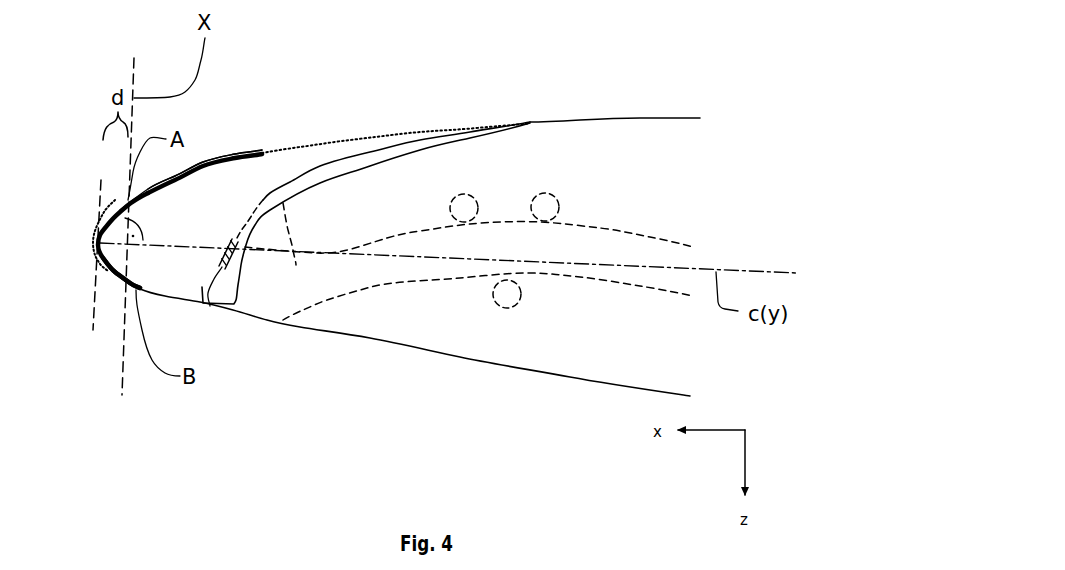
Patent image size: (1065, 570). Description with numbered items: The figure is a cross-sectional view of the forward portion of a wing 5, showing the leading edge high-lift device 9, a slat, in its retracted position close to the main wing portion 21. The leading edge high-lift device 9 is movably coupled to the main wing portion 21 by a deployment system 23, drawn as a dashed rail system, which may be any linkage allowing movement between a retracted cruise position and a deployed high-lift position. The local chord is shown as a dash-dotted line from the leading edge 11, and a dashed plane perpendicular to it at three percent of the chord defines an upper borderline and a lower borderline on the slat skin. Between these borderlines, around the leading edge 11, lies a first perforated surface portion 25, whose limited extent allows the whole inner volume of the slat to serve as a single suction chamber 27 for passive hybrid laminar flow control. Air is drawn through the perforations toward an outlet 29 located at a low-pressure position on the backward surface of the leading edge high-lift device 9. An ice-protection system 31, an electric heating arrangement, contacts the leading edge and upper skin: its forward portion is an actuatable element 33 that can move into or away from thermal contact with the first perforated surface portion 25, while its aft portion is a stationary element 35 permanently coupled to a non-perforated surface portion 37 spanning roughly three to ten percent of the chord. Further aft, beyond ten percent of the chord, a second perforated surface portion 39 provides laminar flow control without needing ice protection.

The wing 5 is at (640, 62).
The leading edge high-lift device 9 is at (281, 112).
The leading edge 11 is at (93, 247).
The main wing portion 21 is at (540, 343).
The deployment system 23 is at (460, 298).
The first perforated surface portion 25 is at (110, 210).
The suction chamber 27 is at (180, 290).
The outlet 29 is at (217, 306).
The ice-protection system 31 is at (152, 217).
The actuatable element 33 is at (112, 268).
The stationary element 35 is at (182, 177).
The non-perforated surface portion 37 is at (203, 167).
The second perforated surface portion 39 is at (370, 130).